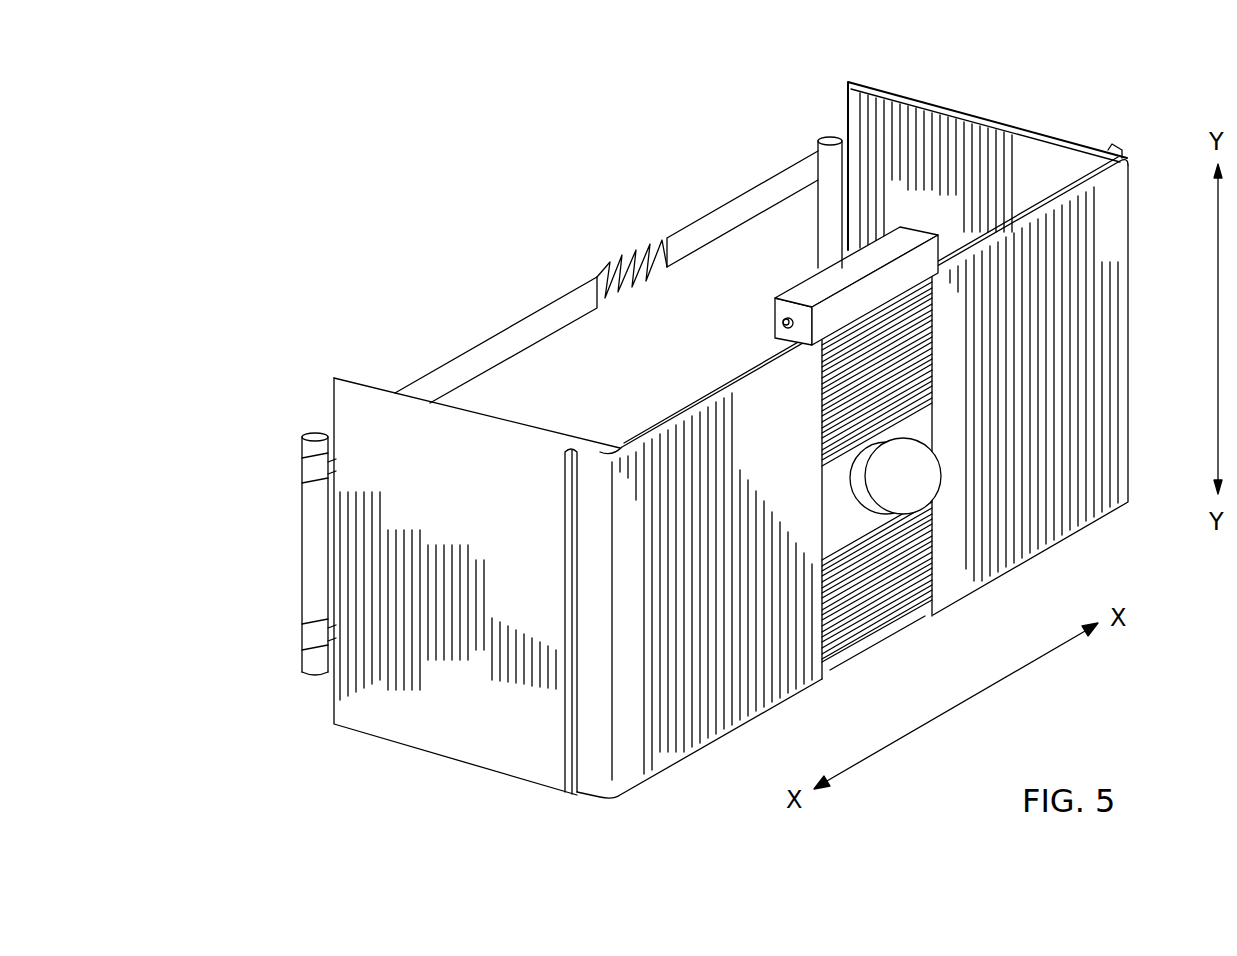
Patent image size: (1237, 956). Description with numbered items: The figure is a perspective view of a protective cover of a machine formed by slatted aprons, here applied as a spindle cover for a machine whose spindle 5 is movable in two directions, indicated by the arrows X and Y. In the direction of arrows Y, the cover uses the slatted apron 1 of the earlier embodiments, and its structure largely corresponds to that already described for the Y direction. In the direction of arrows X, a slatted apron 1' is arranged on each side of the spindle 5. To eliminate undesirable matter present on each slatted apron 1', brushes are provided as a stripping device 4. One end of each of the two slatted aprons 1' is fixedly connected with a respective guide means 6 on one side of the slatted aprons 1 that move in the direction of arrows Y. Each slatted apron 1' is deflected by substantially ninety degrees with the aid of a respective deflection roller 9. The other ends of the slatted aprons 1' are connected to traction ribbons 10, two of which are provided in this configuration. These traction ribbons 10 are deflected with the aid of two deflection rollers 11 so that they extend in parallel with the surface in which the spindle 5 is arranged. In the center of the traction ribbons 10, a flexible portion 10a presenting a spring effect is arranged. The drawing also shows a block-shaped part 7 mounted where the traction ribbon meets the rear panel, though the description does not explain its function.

The slatted apron 1 is at (825, 499).
The slatted apron 1' is at (767, 460).
The stripping device 4 is at (567, 797).
The spindle 5 is at (913, 480).
The guide means 6 is at (913, 627).
The clamping block 7 is at (815, 290).
The deflection roller 9 is at (628, 443).
The traction ribbon 10 is at (695, 217).
The flexible portion 10a is at (632, 265).
The deflection roller 11 is at (312, 432).